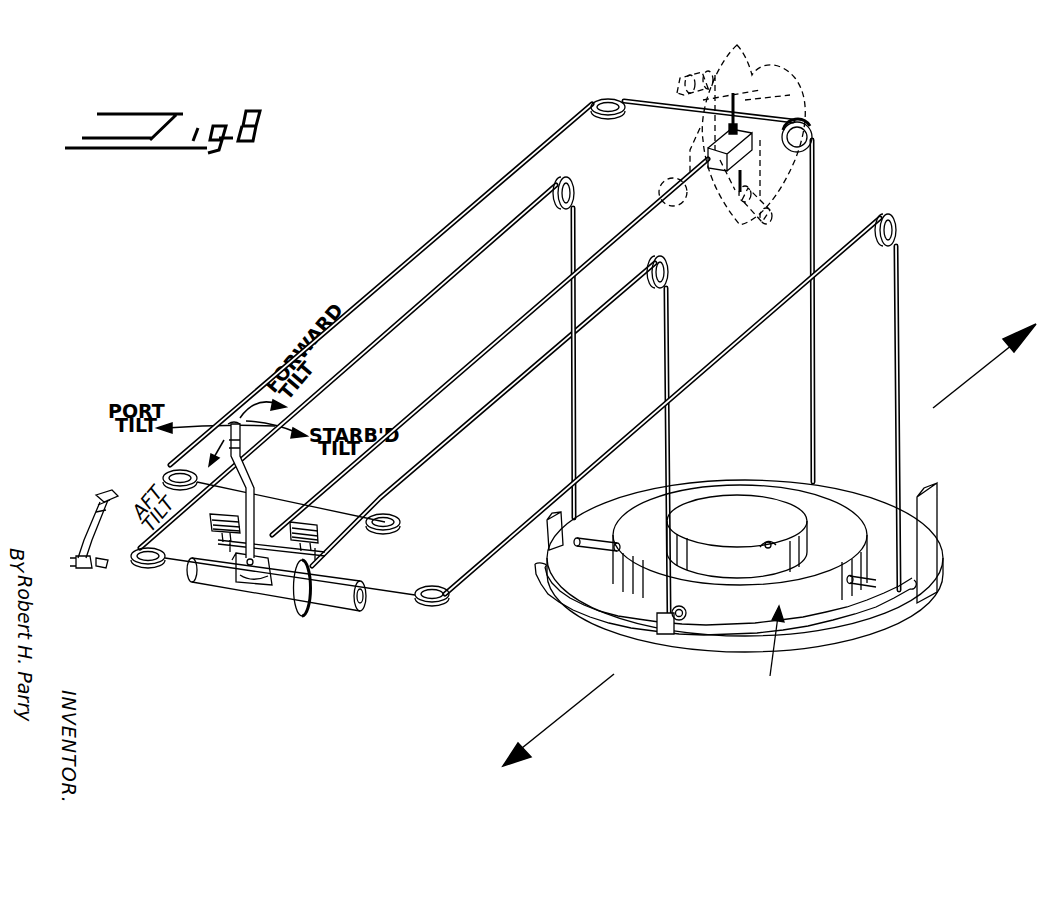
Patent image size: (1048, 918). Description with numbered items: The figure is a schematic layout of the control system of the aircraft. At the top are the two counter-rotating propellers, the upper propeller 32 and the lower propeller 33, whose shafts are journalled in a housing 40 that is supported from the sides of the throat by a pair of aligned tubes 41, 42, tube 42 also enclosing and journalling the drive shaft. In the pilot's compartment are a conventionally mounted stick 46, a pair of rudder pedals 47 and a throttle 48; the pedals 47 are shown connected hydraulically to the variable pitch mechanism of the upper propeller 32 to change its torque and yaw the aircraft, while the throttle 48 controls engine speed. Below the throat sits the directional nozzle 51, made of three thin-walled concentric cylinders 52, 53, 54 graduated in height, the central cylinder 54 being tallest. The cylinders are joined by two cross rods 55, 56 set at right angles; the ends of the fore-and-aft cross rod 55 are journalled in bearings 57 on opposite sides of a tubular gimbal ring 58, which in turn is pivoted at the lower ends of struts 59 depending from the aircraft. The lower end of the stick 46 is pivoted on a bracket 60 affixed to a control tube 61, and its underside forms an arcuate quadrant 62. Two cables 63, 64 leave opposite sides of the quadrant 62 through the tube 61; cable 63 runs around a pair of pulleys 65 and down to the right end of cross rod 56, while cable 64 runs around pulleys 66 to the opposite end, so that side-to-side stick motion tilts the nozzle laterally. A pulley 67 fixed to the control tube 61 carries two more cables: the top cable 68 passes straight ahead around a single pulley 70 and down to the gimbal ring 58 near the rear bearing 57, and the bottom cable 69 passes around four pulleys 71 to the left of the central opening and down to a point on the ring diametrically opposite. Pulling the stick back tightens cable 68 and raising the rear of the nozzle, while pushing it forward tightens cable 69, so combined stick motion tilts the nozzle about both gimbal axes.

The upper propeller 32 is at (686, 70).
The lower propeller 33 is at (772, 214).
The housing 40 is at (692, 117).
The tube 41 is at (684, 168).
The tube 42 is at (805, 108).
The stick 46 is at (252, 470).
The rudder pedals 47 is at (212, 524).
The throttle 48 is at (98, 495).
The directional nozzle 51 is at (772, 653).
The outer cylinder 52 is at (732, 650).
The intermediate cylinder 53 is at (735, 582).
The central cylinder 54 is at (720, 548).
The cross rod 55 is at (766, 543).
The cross rod 56 is at (646, 552).
The bearings 57 is at (690, 616).
The gimbal ring 58 is at (840, 624).
The struts 59 is at (548, 538).
The bracket 60 is at (264, 558).
The control tube 61 is at (346, 608).
The arcuate quadrant 62 is at (248, 582).
The cable 63 is at (900, 446).
The cable 64 is at (376, 347).
The pulleys 65 is at (897, 231).
The pulleys 66 is at (574, 195).
The pulley 67 is at (306, 612).
The cable 68 is at (460, 433).
The cable 69 is at (674, 102).
The pulley 70 is at (669, 272).
The pulleys 71 is at (608, 99).